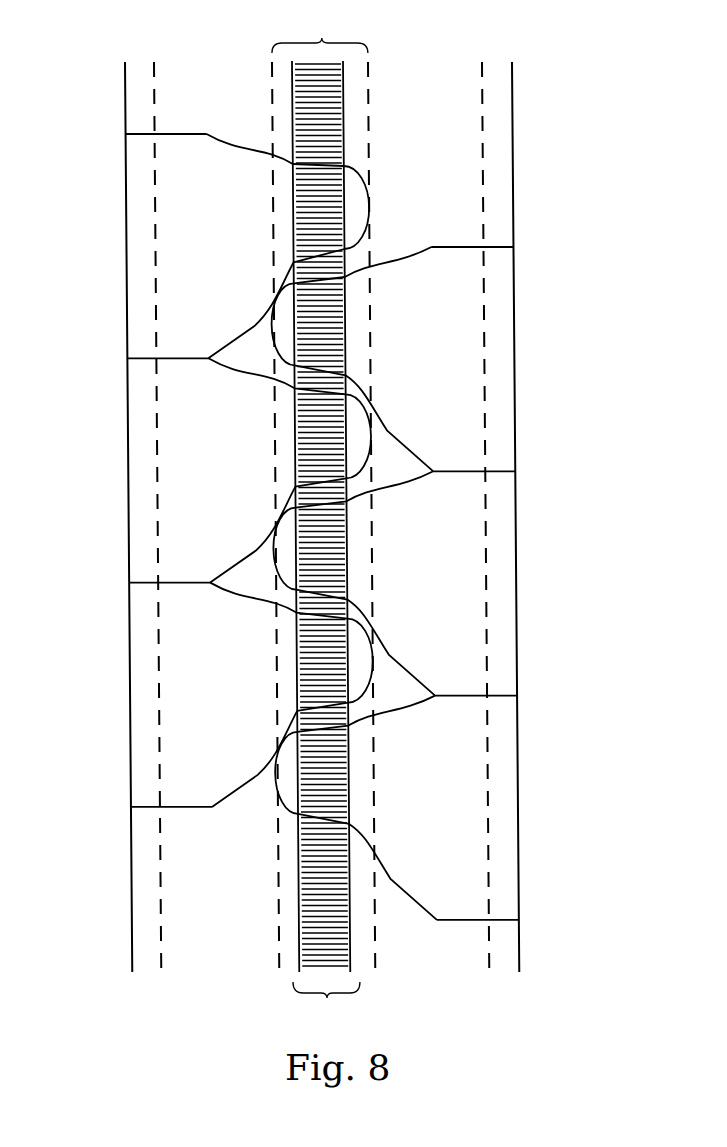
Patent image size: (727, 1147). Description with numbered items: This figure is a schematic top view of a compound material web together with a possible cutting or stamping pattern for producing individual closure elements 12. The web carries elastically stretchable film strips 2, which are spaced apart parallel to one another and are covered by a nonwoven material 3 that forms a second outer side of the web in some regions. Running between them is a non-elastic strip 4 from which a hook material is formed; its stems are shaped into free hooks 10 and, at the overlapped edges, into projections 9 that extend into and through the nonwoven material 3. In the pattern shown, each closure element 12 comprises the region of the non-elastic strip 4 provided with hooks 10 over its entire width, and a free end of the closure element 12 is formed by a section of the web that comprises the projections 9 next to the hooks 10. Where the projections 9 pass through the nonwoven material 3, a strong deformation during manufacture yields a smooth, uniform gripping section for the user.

The film strip 2 is at (176, 924).
The nonwoven material 3 is at (450, 192).
The non-elastic strip 4 is at (324, 491).
The projection 9 is at (326, 1004).
The hook 10 is at (331, 90).
The closure element 12 is at (174, 720).